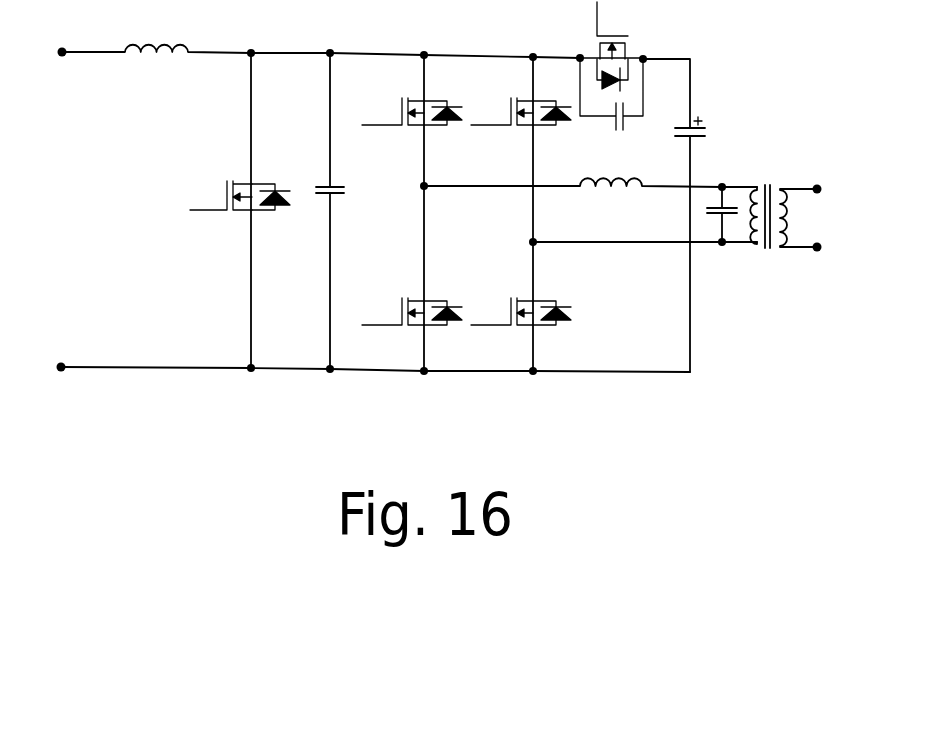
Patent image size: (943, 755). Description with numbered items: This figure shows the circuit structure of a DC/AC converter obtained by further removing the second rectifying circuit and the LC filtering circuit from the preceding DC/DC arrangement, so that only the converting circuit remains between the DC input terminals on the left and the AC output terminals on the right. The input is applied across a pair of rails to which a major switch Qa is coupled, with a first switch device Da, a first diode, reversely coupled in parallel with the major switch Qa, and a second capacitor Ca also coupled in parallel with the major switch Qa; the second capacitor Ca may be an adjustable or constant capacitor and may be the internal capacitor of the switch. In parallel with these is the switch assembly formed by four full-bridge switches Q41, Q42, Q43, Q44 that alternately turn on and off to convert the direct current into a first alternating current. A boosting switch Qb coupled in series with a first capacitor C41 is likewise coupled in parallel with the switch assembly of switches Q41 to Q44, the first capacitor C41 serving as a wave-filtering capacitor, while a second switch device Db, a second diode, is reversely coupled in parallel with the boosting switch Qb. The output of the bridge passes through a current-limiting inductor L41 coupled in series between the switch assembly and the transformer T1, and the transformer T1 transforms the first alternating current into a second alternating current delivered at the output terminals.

The major switch Qa is at (221, 195).
The first switch device Da is at (271, 186).
The second capacitor Ca is at (334, 211).
The full-bridge switch Q41 is at (412, 111).
The full-bridge switch Q42 is at (521, 111).
The full-bridge switch Q43 is at (412, 311).
The full-bridge switch Q44 is at (521, 311).
The boosting switch Qb is at (611, 30).
The second switch device Db is at (626, 94).
The first capacitor C41 is at (690, 215).
The current-limiting inductor L41 is at (590, 175).
The transformer T1 is at (783, 207).